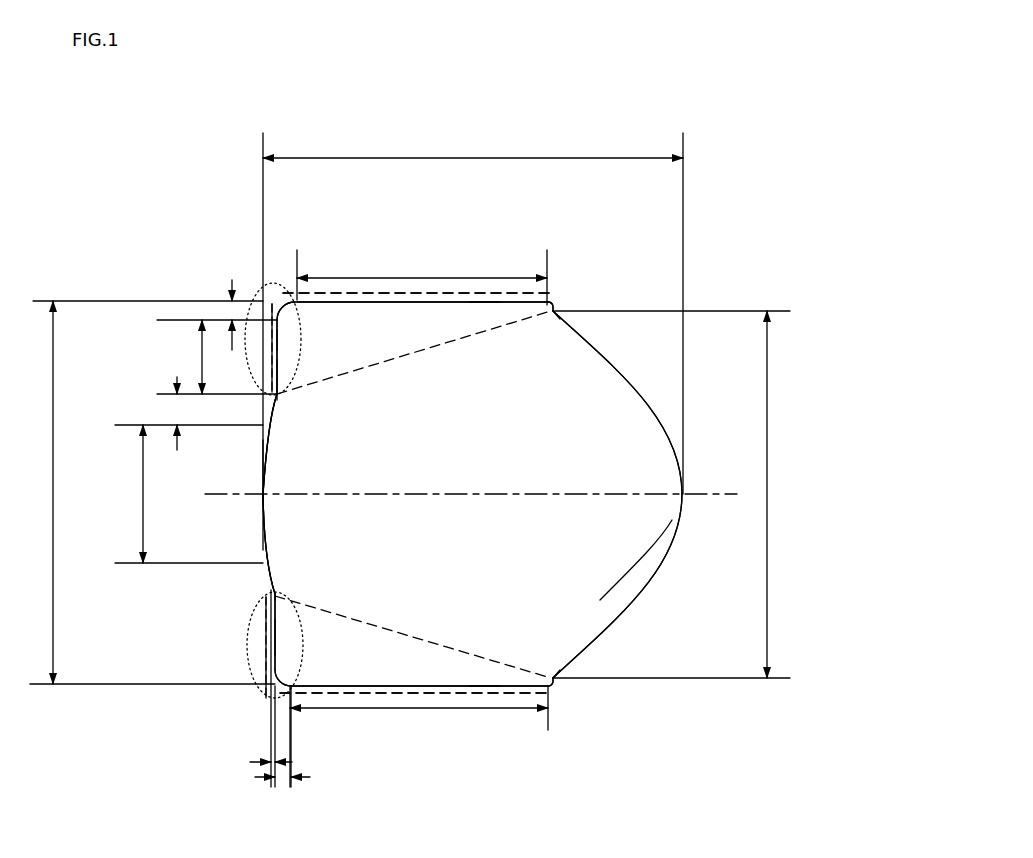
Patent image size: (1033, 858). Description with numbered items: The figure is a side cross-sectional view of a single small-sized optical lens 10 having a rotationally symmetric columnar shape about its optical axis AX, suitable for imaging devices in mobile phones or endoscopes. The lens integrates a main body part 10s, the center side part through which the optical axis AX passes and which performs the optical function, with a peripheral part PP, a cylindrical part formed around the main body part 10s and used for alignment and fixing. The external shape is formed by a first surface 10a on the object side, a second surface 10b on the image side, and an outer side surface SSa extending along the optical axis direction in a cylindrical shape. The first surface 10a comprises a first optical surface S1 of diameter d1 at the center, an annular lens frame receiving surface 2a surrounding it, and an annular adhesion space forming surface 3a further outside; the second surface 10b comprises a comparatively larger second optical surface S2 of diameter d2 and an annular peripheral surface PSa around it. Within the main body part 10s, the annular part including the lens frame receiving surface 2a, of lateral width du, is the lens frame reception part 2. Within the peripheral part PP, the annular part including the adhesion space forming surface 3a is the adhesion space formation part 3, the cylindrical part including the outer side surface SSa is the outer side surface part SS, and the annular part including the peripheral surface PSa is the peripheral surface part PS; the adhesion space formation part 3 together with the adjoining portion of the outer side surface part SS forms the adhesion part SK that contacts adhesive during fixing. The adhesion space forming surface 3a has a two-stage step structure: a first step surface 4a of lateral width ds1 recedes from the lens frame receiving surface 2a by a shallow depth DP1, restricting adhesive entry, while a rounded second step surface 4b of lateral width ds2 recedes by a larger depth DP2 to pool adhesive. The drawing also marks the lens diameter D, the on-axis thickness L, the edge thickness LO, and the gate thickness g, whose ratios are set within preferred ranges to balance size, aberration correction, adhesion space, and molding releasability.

The optical lens 10 is at (732, 92).
The lens frame reception part 2 is at (260, 410).
The lens frame receiving surface 2a is at (272, 413).
The adhesion space formation part 3 is at (268, 312).
The adhesion space forming surface 3a is at (277, 340).
The first step surface 4a is at (277, 367).
The second step surface 4b is at (283, 305).
The first surface 10a is at (207, 587).
The second surface 10b is at (642, 643).
The main body part 10s is at (608, 412).
The first optical surface S1 is at (263, 526).
The second optical surface S2 is at (597, 640).
The adhesion part SK is at (272, 315).
The peripheral part PP is at (380, 293).
The outer side surface part SS is at (462, 305).
The outer side surface SSa is at (485, 300).
The peripheral surface part PS is at (563, 292).
The peripheral surface PSa is at (570, 295).
The optical axis AX is at (703, 497).
The on-axis thickness L is at (473, 145).
The edge thickness LO is at (422, 277).
The gate thickness g is at (419, 736).
The lens diameter D is at (43, 492).
The optical surface diameter of first optical surface d1 is at (129, 494).
The optical surface diameter of second optical surface d2 is at (780, 494).
The lateral width of lens frame receiving surface du is at (163, 413).
The lateral width of first step surface ds1 is at (185, 357).
The lateral width of second step surface ds2 is at (212, 315).
The depth of first step surface DP1 is at (260, 736).
The depth of second step surface DP2 is at (294, 736).